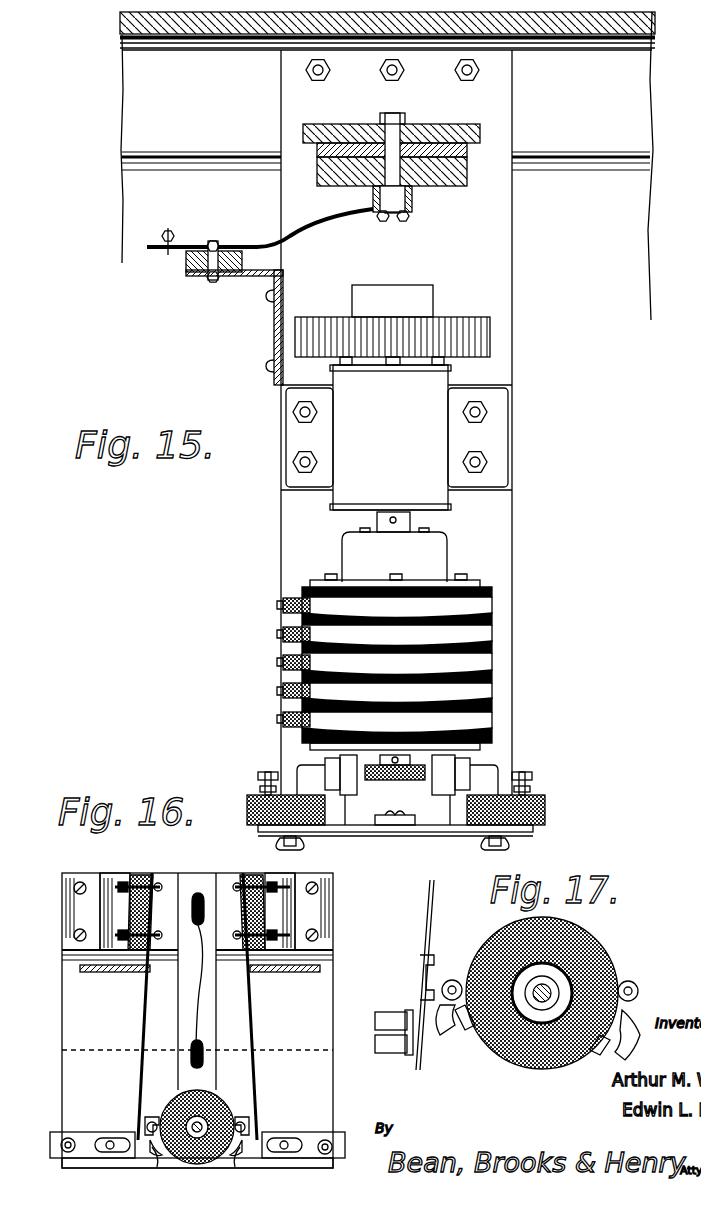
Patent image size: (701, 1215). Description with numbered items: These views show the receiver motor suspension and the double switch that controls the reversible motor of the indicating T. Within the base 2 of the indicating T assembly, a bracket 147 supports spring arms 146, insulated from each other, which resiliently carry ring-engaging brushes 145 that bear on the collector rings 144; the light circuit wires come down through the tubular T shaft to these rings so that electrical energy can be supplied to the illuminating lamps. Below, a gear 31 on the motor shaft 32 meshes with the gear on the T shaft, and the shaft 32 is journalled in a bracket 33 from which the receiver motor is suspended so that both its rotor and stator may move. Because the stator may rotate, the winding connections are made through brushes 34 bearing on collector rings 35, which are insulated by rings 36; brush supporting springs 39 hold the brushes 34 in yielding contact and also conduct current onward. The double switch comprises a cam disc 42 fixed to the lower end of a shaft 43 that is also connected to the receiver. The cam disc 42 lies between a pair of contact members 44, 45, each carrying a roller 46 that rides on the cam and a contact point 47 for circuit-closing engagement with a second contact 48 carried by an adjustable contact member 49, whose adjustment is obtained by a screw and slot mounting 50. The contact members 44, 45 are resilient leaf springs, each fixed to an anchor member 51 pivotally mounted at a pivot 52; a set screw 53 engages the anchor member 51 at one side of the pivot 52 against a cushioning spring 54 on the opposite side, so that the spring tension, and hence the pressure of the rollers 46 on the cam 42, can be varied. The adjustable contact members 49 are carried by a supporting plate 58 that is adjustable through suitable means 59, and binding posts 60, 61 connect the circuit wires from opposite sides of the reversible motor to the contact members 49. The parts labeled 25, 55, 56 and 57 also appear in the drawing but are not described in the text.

In FIG. 15, the beam 25 is at (124, 18).
In FIG. 15, the base 2 is at (133, 95).
In FIG. 15, the collector rings 144 is at (463, 188).
In FIG. 15, the ring-engaging brushes 145 is at (413, 207).
In FIG. 15, the spring arms 146 is at (337, 214).
In FIG. 15, the bracket 147 is at (190, 277).
In FIG. 15, the gear 31 is at (490, 340).
In FIG. 15, the bracket 33 is at (413, 437).
In FIG. 15, the shaft 32 is at (410, 525).
In FIG. 15, the brushes 34 is at (290, 632).
In FIG. 15, the brush supporting springs 39 is at (290, 662).
In FIG. 15, the insulating rings 36 is at (493, 594).
In FIG. 15, the collector rings 35 is at (470, 637).
In FIG. 15, the roller 46 is at (330, 762).
In FIG. 16, the roller 46 is at (150, 1115).
In FIG. 17, the roller 46 is at (446, 978).
In FIG. 15, the binding post 60 is at (273, 792).
In FIG. 16, the binding post 60 is at (52, 1145).
In FIG. 15, the binding post 61 is at (534, 776).
In FIG. 16, the binding post 61 is at (344, 1148).
In FIG. 15, the adjustable contact member 49 is at (326, 775).
In FIG. 16, the adjustable contact member 49 is at (100, 1140).
In FIG. 17, the adjustable contact member 49 is at (390, 1053).
In FIG. 15, the pawl 56 is at (357, 790).
In FIG. 16, the pawl 56 is at (163, 1169).
In FIG. 17, the pawl 56 is at (468, 1035).
In FIG. 15, the pawl 57 is at (439, 790).
In FIG. 16, the pawl 57 is at (233, 1169).
In FIG. 17, the pawl 57 is at (608, 1055).
In FIG. 15, the cam disc 42 is at (398, 781).
In FIG. 16, the cam disc 42 is at (172, 1108).
In FIG. 17, the cam disc 42 is at (543, 1070).
In FIG. 16, the shaft 43 is at (205, 1120).
In FIG. 17, the shaft 43 is at (573, 985).
In FIG. 15, the supporting plate 58 is at (433, 833).
In FIG. 15, the adjusting means 59 is at (386, 826).
In FIG. 16, the adjusting means 59 is at (196, 980).
In FIG. 16, the anchor member 51 is at (142, 895).
In FIG. 16, the pivot 52 is at (137, 887).
In FIG. 16, the set screw 53 is at (115, 952).
In FIG. 16, the cushioning spring 54 is at (108, 888).
In FIG. 16, the contact member 44 is at (147, 1020).
In FIG. 16, the contact member 45 is at (250, 1020).
In FIG. 16, the contact point 47 is at (148, 1124).
In FIG. 17, the contact point 47 is at (418, 992).
In FIG. 16, the second contact 48 is at (149, 1142).
In FIG. 17, the second contact 48 is at (410, 1018).
In FIG. 16, the screw and slot mounting 50 is at (96, 1142).
In FIG. 17, the tooth 55 is at (442, 1035).